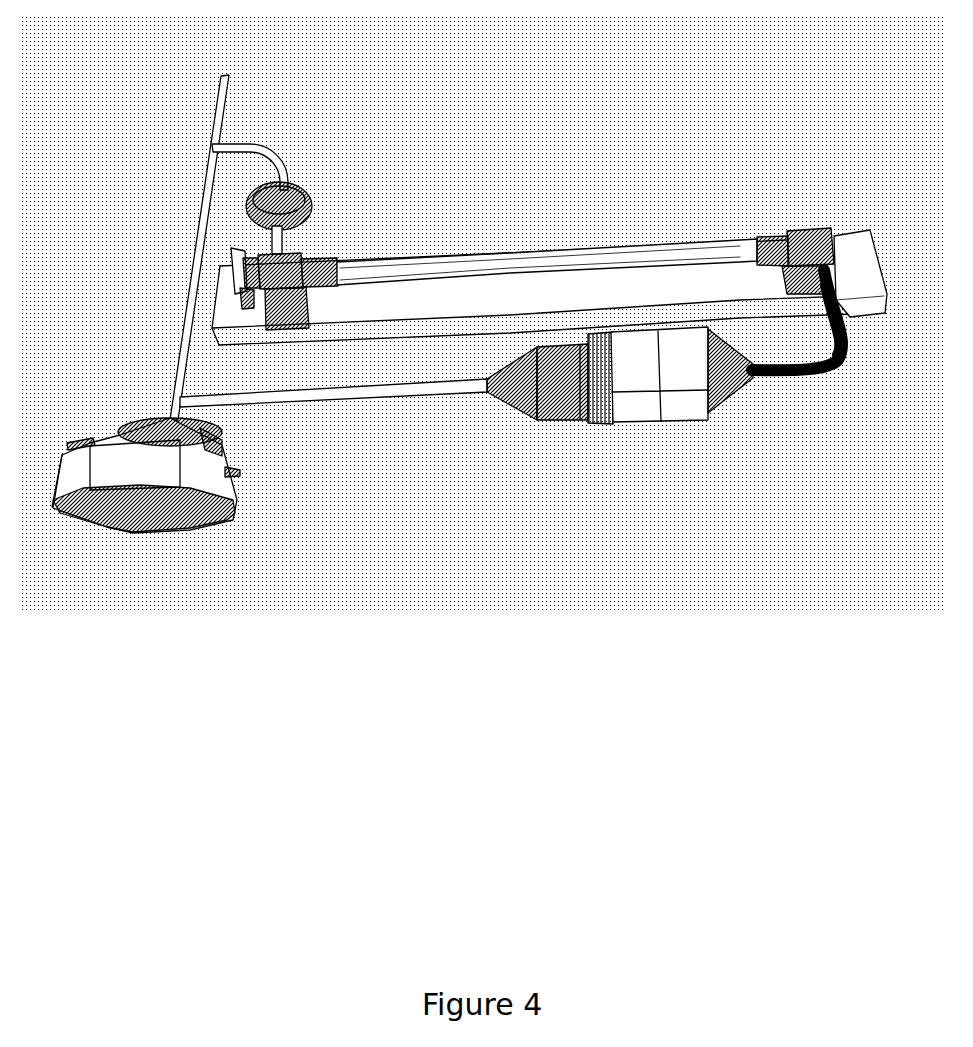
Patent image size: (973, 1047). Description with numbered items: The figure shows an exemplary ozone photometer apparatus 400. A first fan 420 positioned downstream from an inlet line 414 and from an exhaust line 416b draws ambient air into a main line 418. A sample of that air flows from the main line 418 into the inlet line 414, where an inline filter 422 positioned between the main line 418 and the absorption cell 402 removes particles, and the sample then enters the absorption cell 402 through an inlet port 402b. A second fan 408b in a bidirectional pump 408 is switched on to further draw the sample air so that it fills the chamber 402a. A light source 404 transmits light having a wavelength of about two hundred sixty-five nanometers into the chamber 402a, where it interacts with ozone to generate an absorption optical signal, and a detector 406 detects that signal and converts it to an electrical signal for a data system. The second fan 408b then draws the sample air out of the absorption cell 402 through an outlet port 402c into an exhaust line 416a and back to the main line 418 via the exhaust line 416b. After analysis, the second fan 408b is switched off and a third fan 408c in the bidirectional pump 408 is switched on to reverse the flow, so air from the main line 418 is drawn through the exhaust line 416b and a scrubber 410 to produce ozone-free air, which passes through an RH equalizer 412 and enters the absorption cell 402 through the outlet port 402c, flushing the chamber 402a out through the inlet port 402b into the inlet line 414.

The ozone photometer apparatus 400 is at (513, 82).
The absorption cell 402 is at (432, 258).
The chamber 402a is at (560, 243).
The inlet port 402b is at (280, 250).
The outlet port 402c is at (838, 248).
The light source 404 is at (248, 300).
The detector 406 is at (818, 232).
The bidirectional pump 408 is at (648, 413).
The second fan 408b is at (628, 413).
The third fan 408c is at (698, 413).
The scrubber 410 is at (551, 410).
The RH equalizer 412 is at (782, 375).
The inlet line 414 is at (253, 146).
The exhaust line 416a is at (838, 290).
The exhaust line 416b is at (318, 395).
The main line 418 is at (212, 99).
The first fan 420 is at (193, 527).
The inline filter 422 is at (303, 188).